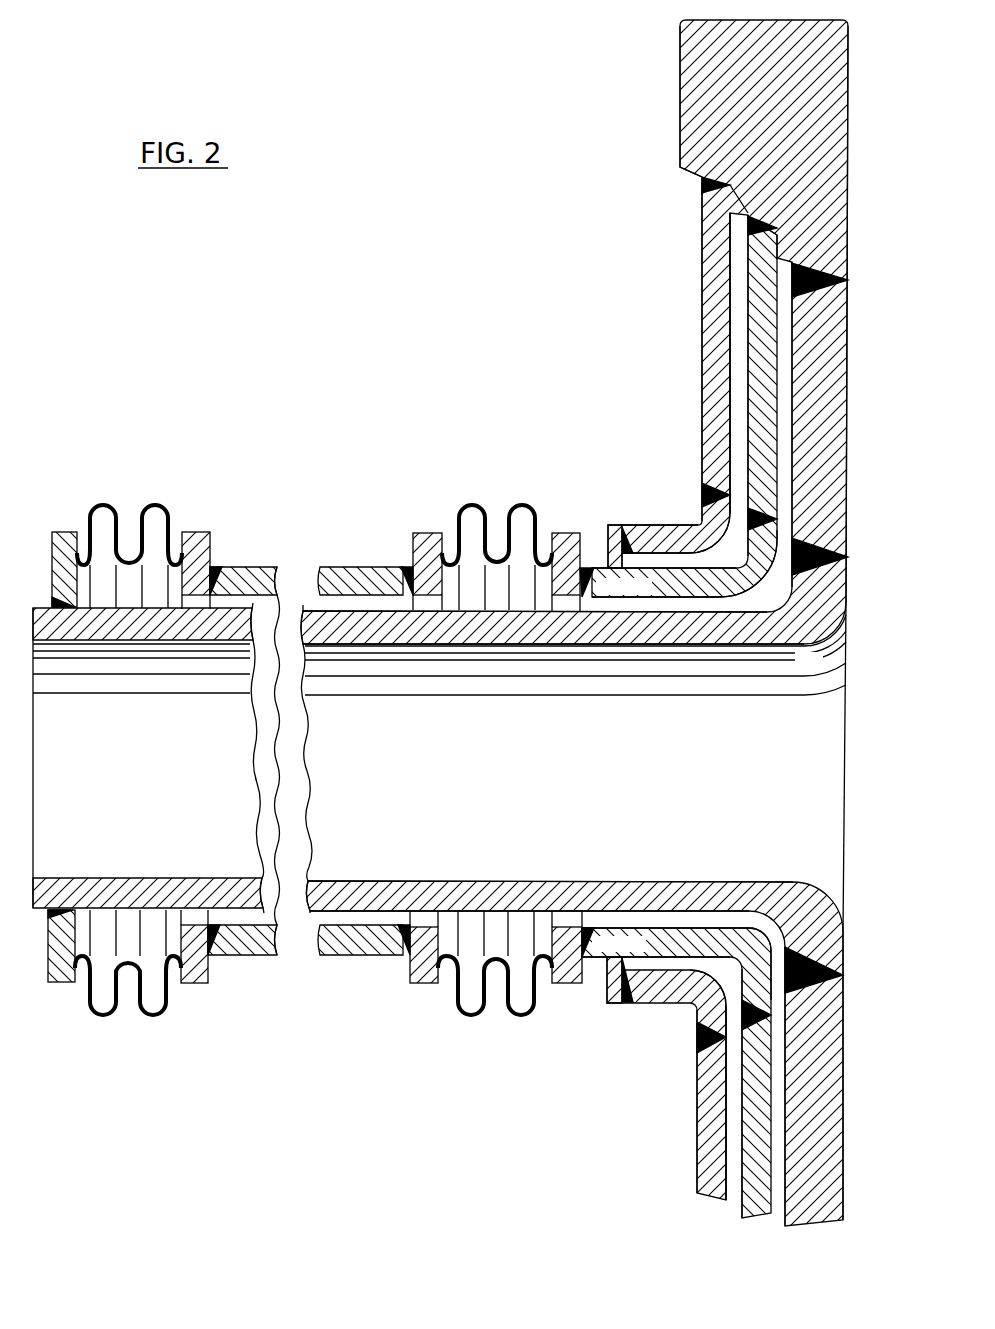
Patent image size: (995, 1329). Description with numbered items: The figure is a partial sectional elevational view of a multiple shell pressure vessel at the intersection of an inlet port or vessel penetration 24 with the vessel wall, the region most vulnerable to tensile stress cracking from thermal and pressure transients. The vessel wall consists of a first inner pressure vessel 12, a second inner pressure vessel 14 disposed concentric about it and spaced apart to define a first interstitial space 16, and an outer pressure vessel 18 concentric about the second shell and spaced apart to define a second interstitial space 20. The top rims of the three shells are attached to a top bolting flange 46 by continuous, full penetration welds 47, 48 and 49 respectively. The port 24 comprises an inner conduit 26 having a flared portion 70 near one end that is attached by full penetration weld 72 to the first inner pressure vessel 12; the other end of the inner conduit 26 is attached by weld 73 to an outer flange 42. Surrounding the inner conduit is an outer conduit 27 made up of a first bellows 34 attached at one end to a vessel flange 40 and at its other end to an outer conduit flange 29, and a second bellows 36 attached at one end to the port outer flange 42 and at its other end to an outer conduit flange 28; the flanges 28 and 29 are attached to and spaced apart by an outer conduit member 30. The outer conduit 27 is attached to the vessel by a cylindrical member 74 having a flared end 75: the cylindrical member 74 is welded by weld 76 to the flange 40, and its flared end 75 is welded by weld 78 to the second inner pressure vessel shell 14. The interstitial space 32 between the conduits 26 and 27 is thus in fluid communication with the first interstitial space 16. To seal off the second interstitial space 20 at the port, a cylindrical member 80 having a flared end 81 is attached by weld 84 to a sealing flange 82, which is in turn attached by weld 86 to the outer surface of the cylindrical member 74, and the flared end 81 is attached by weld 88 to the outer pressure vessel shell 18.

The first inner pressure vessel 12 is at (835, 465).
The second inner pressure vessel 14 is at (752, 412).
The first interstitial space 16 is at (783, 408).
The outer pressure vessel 18 is at (712, 348).
The second interstitial space 20 is at (740, 386).
The inlet port 24 is at (168, 1094).
The inner conduit 26 is at (372, 644).
The outer conduit 27 is at (362, 563).
The outer conduit flange 28 is at (198, 532).
The outer conduit flange 29 is at (437, 532).
The outer conduit member 30 is at (275, 568).
The interstitial space 32 is at (332, 603).
The first bellows 34 is at (522, 506).
The second bellows 36 is at (154, 504).
The vessel flange 40 is at (570, 532).
The outer flange 42 is at (55, 566).
The top bolting flange 46 is at (688, 92).
The full penetration weld 47 is at (850, 281).
The full penetration weld 48 is at (750, 222).
The full penetration weld 49 is at (702, 184).
The flared portion 70 is at (830, 630).
The full penetration weld 72 is at (848, 557).
The full penetration weld 73 is at (52, 603).
The cylindrical member 74 is at (668, 598).
The flared end 75 is at (768, 540).
The full penetration weld 76 is at (588, 582).
The full penetration weld 78 is at (748, 535).
The cylindrical member 80 is at (645, 530).
The flared end 81 is at (703, 520).
The sealing flange 82 is at (609, 528).
The full penetration weld 84 is at (624, 526).
The full penetration weld 86 is at (620, 577).
The full penetration weld 88 is at (702, 494).